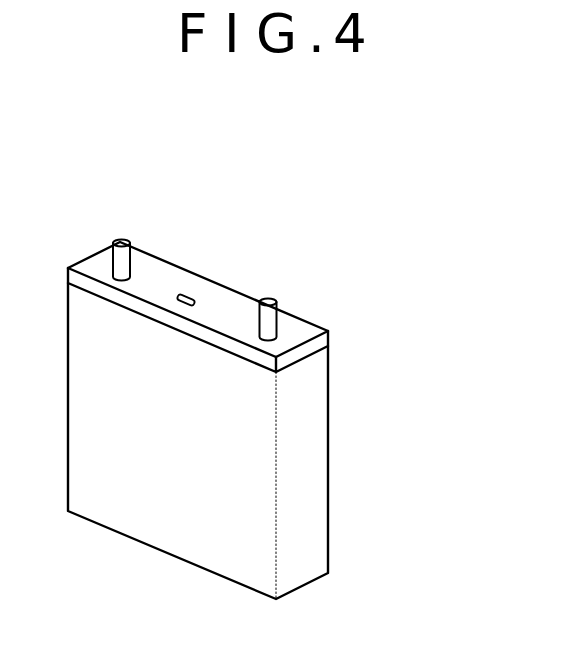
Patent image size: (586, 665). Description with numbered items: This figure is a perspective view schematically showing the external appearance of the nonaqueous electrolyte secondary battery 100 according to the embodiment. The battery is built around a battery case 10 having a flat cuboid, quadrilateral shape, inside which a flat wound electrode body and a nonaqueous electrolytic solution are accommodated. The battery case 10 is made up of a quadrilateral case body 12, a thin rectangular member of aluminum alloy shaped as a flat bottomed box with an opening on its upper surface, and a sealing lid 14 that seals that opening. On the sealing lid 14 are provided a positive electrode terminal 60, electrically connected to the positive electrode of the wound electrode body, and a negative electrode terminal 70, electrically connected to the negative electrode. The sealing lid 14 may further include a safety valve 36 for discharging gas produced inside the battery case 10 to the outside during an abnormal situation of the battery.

The nonaqueous electrolyte secondary battery 100 is at (445, 205).
The battery case 10 is at (173, 527).
The case body 12 is at (320, 540).
The sealing lid 14 is at (330, 340).
The safety valve 36 is at (188, 296).
The positive electrode terminal 60 is at (123, 241).
The negative electrode terminal 70 is at (269, 300).